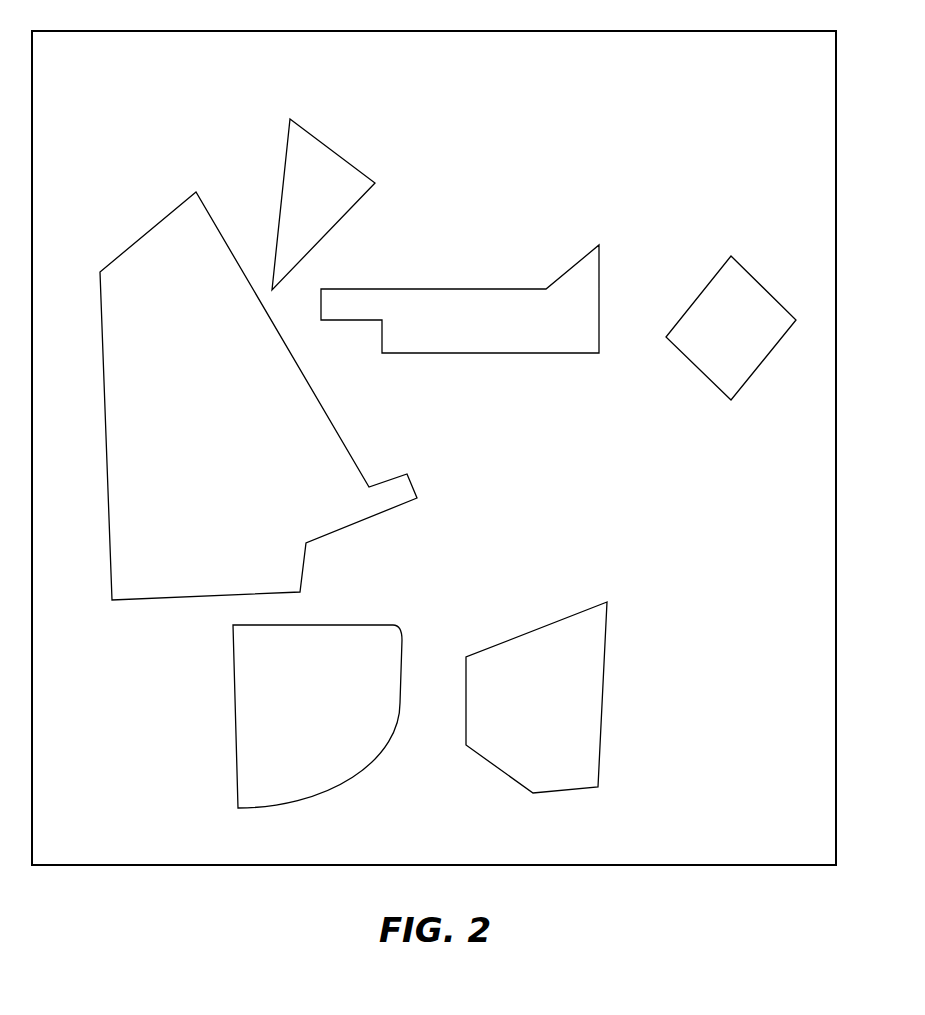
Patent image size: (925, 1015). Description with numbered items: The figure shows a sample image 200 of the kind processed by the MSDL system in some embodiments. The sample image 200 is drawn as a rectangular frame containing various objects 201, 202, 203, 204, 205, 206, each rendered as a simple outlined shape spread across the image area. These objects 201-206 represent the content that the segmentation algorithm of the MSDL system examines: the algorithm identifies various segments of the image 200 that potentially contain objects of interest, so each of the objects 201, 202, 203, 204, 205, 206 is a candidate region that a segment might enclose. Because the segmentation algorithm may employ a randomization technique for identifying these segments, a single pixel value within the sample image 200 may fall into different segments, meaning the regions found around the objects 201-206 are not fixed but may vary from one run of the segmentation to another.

The sample image 200 is at (810, 25).
The object 201 is at (105, 445).
The object 202 is at (338, 153).
The object 203 is at (492, 289).
The object 204 is at (353, 625).
The object 205 is at (587, 607).
The object 206 is at (710, 382).